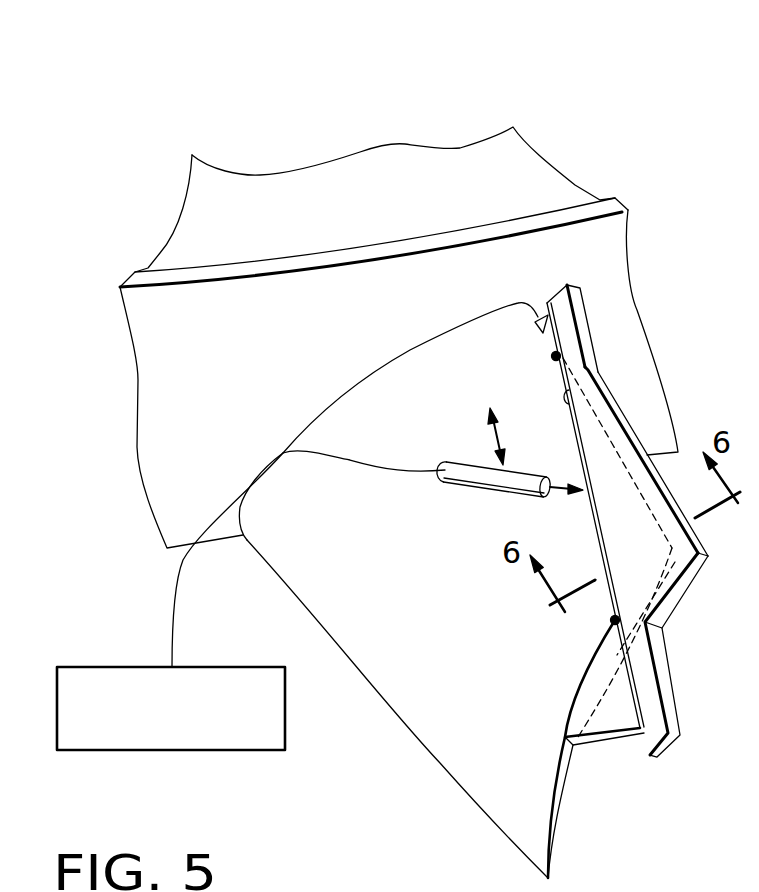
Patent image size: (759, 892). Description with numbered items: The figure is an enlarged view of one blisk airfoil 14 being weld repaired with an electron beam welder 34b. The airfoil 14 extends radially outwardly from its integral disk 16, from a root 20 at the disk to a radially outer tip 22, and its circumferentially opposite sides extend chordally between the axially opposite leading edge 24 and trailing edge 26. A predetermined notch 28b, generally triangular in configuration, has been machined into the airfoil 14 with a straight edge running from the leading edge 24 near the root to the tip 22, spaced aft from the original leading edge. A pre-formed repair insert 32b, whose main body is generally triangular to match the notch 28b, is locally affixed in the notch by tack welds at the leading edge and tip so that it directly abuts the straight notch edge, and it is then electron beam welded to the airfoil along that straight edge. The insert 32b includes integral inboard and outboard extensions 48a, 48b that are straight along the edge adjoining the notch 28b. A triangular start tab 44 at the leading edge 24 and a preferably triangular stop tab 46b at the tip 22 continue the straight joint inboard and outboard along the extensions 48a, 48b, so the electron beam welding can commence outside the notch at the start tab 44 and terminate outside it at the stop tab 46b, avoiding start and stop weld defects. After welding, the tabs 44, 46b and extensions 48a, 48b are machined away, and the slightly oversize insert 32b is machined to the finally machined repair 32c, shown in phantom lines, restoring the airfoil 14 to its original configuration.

The integral disk 16 is at (407, 202).
The root 20 is at (377, 370).
The airfoil 14 is at (457, 658).
The leading edge 24 is at (540, 310).
The start tab 44 is at (552, 352).
The notch 28b is at (562, 388).
The inboard extension 48a is at (580, 320).
The finally machined repair 32c is at (612, 432).
The repair insert 32b is at (655, 534).
The trailing edge 26 is at (438, 763).
The tip 22 is at (557, 802).
The outboard extension 48b is at (670, 703).
The stop tab 46b is at (613, 742).
The electron beam welder 34b is at (210, 750).